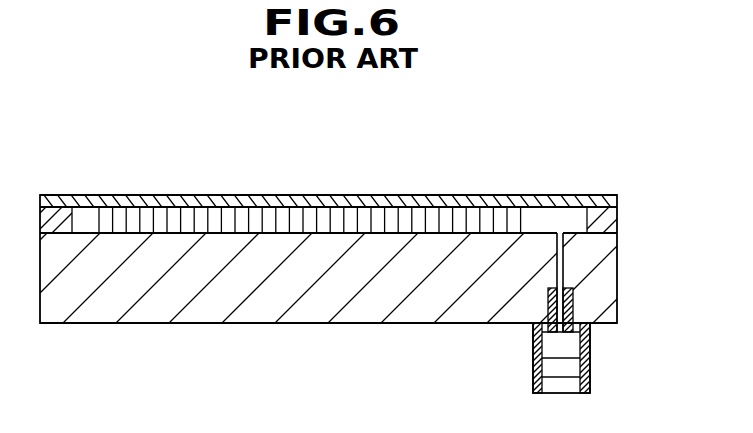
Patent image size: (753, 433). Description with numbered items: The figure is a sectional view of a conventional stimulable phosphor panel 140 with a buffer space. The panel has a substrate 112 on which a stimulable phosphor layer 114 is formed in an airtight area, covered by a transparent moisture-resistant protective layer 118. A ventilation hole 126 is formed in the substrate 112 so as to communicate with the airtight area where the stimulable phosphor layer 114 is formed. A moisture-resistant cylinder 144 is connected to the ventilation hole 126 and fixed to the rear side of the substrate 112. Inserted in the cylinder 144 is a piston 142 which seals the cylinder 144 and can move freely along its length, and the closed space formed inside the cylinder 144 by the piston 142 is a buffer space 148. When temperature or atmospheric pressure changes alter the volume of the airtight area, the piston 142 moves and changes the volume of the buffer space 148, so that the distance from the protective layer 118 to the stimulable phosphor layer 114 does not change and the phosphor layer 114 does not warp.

The stimulable phosphor panel 140 is at (584, 113).
The substrate 112 is at (597, 285).
The stimulable phosphor layer 114 is at (215, 215).
The transparent moisture-resistant protective layer 118 is at (353, 203).
The ventilation hole 126 is at (568, 249).
The buffer space 148 is at (552, 345).
The moisture-resistant cylinder 144 is at (590, 360).
The piston 142 is at (552, 368).